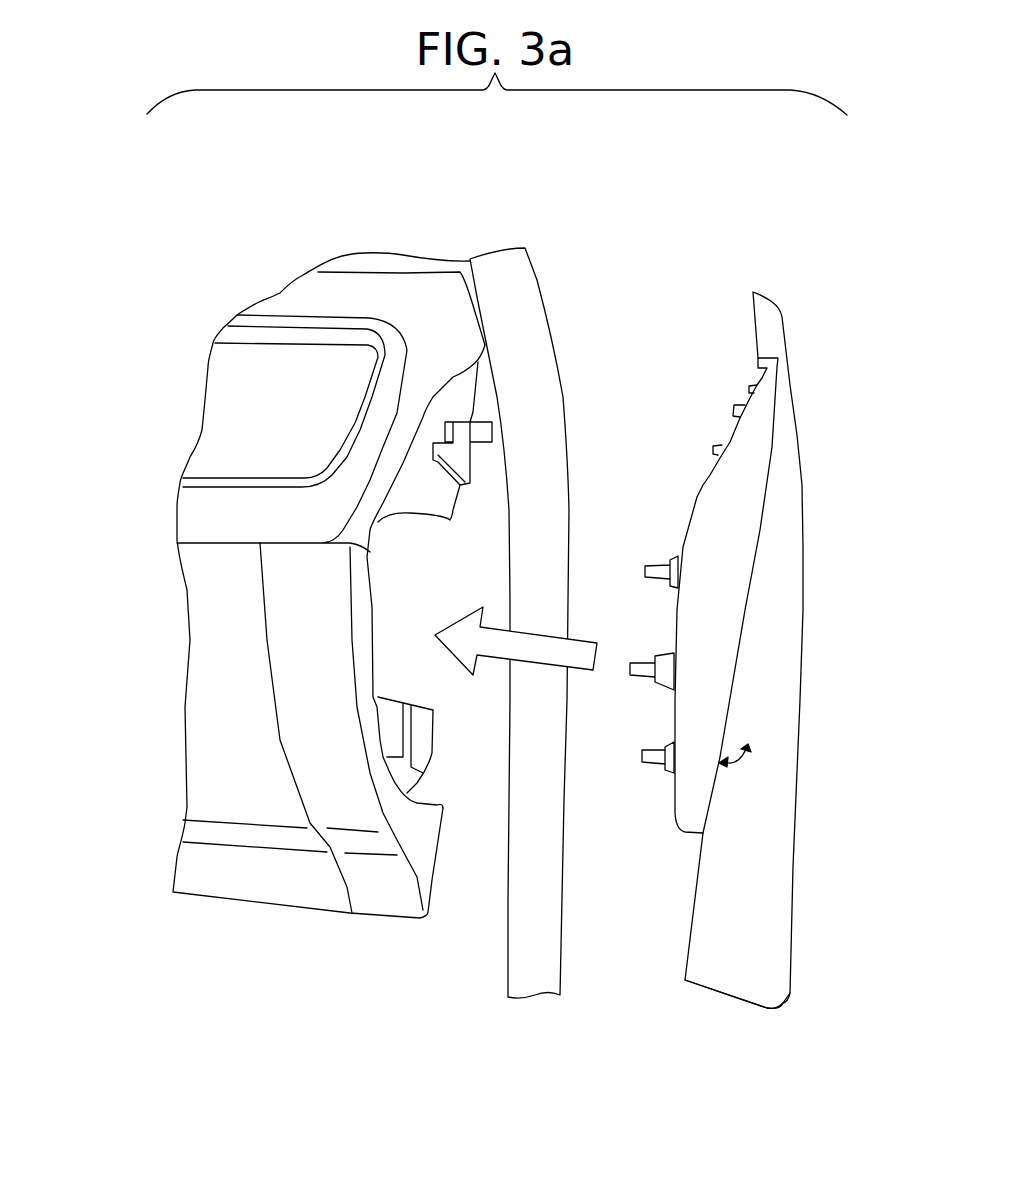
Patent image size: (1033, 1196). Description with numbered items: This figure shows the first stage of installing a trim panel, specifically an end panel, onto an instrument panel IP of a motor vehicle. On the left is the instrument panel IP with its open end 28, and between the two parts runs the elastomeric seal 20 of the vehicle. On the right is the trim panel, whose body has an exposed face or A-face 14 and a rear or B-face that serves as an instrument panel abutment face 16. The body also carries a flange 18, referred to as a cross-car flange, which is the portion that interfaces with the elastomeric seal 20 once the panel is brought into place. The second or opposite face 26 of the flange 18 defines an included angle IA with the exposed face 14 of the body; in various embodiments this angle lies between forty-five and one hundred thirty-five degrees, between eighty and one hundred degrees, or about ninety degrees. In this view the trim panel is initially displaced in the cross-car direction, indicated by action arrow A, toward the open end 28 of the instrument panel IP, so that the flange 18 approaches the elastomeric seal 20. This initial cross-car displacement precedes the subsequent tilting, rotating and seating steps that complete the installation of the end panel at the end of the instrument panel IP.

The instrument panel IP is at (245, 688).
The elastomeric seal 20 is at (532, 365).
The flange 18 is at (802, 657).
The instrument panel abutment face 16 is at (703, 485).
The exposed face 14 is at (743, 625).
The second face of the flange 26 is at (748, 815).
The open end of the instrument panel 28 is at (447, 869).
The action arrow A is at (527, 643).
The included angle IA is at (743, 760).